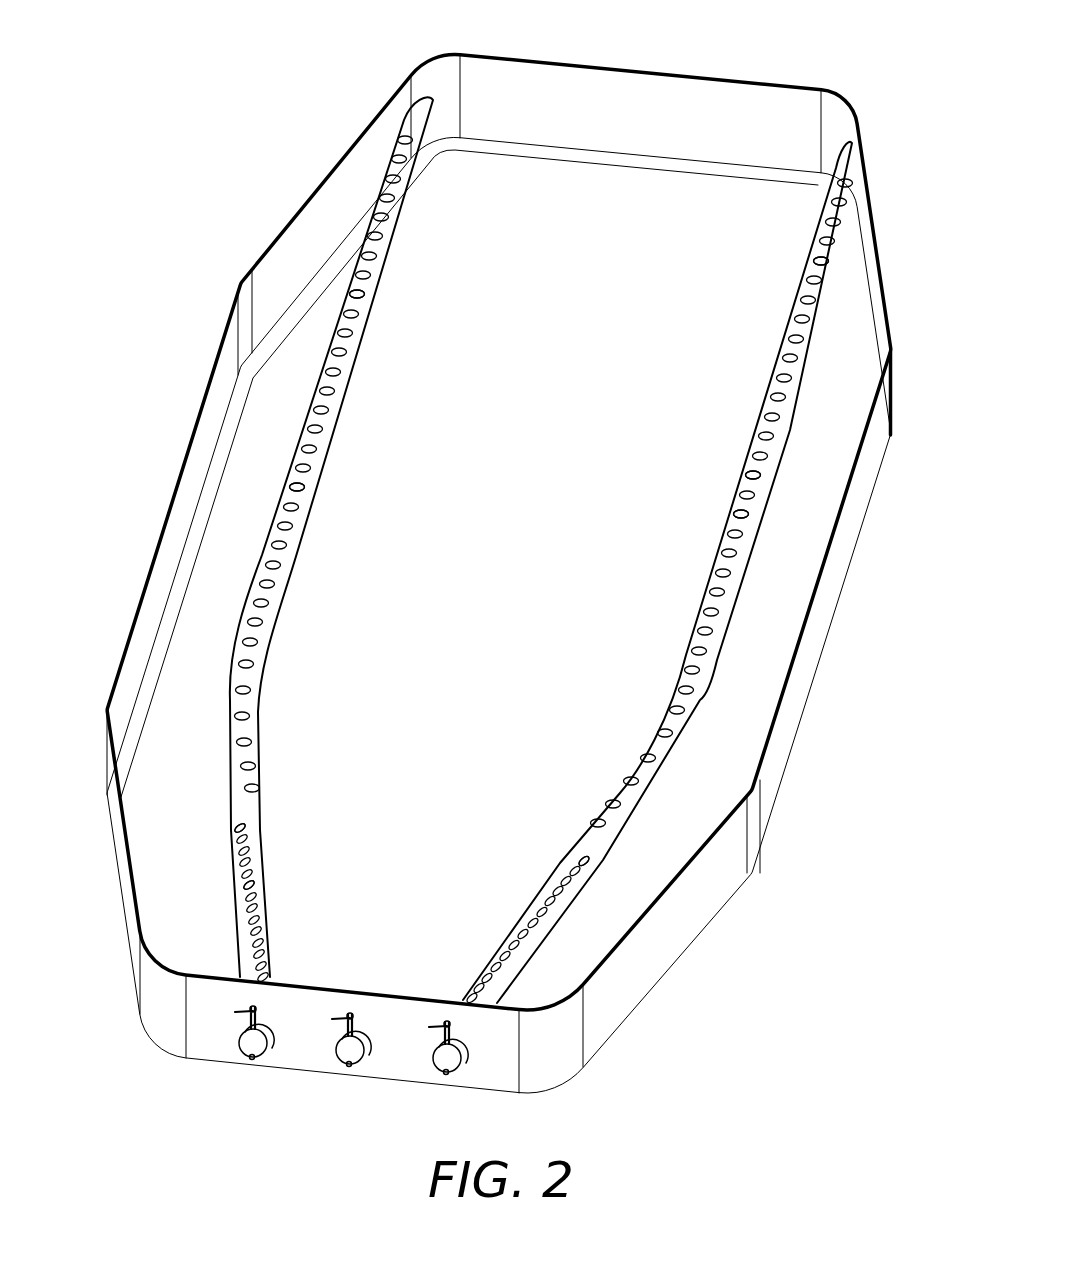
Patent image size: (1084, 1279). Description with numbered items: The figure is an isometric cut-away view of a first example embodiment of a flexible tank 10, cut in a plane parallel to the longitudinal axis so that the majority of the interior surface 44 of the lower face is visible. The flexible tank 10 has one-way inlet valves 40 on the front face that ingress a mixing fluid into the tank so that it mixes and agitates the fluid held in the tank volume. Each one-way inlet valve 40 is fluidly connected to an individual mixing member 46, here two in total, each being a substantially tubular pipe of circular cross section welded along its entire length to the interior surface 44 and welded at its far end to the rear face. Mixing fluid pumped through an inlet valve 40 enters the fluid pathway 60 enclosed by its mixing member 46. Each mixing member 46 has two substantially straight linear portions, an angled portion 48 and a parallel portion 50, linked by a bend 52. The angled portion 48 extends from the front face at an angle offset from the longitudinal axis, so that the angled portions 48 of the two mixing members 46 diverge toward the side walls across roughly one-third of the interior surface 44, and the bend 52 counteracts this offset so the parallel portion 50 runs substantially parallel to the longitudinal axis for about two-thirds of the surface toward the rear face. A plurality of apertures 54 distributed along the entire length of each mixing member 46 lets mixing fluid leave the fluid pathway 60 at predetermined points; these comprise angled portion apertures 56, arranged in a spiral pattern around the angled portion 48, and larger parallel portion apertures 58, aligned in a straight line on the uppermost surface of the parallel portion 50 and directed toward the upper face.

The flexible tank 10 is at (650, 973).
The one-way inlet valve 40 is at (247, 1047).
The interior surface of the lower face 44 is at (618, 203).
The mixing member 46 is at (233, 707).
The angled portion 48 is at (258, 845).
The parallel portion 50 is at (350, 363).
The bend 52 is at (232, 642).
The apertures 54 is at (235, 880).
The angled portion apertures 56 is at (233, 827).
The parallel portion apertures 58 is at (288, 480).
The fluid pathway 60 is at (353, 285).